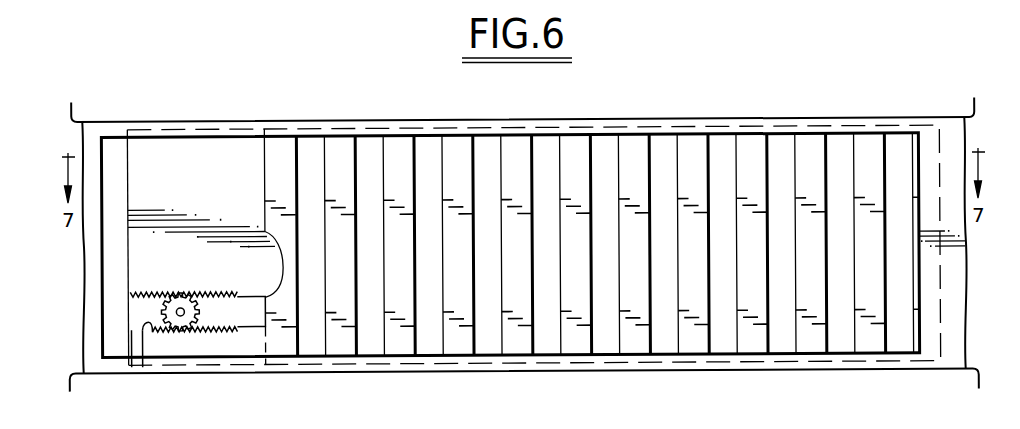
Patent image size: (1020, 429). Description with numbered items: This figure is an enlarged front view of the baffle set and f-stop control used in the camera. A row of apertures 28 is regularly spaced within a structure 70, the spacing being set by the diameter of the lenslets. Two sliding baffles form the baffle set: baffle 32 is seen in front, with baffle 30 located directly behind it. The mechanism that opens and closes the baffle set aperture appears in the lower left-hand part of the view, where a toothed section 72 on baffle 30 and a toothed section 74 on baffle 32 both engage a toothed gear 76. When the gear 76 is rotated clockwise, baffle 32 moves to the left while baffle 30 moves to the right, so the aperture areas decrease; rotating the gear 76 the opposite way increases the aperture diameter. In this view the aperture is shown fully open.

The apertures 28 is at (368, 143).
The baffle 30 is at (210, 137).
The baffle 32 is at (258, 347).
The structure 70 is at (665, 118).
The toothed section 72 is at (140, 296).
The toothed section 74 is at (139, 349).
The toothed gear 76 is at (200, 307).